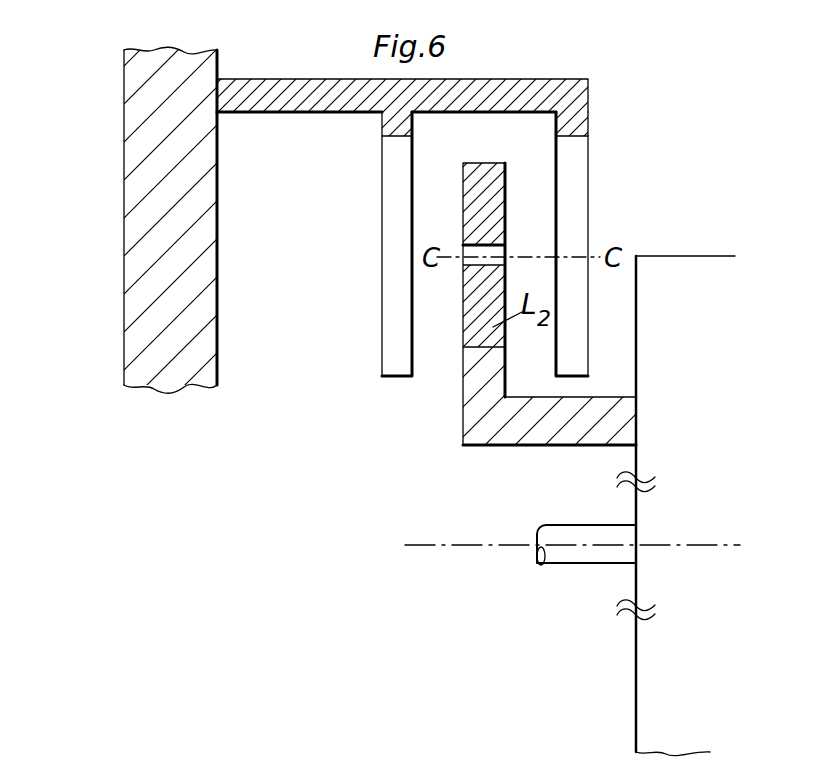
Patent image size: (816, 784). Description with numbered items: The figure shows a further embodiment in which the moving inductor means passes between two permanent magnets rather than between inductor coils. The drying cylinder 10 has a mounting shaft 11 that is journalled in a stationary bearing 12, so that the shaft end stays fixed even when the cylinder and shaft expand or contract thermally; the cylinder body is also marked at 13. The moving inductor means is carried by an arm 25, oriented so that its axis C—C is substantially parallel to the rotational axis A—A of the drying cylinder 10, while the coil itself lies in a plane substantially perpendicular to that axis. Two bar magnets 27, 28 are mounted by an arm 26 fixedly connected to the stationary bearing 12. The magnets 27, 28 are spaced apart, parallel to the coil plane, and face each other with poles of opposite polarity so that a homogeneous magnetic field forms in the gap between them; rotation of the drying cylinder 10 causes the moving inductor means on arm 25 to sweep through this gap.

The drying cylinder 10 is at (618, 506).
The mounting shaft 11 is at (580, 557).
The stationary bearing 12 is at (200, 275).
The body surface 13 is at (579, 504).
The arm 25 is at (463, 443).
The arm 26 is at (325, 110).
The bar magnet 27 is at (397, 203).
The bar magnet 28 is at (580, 207).